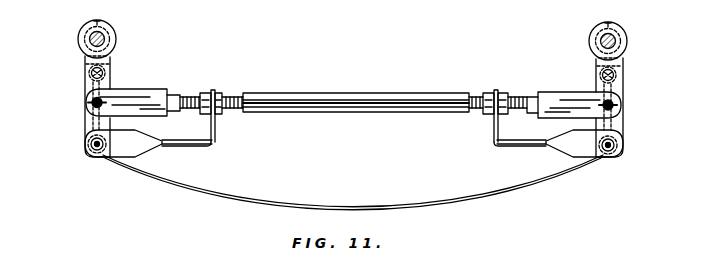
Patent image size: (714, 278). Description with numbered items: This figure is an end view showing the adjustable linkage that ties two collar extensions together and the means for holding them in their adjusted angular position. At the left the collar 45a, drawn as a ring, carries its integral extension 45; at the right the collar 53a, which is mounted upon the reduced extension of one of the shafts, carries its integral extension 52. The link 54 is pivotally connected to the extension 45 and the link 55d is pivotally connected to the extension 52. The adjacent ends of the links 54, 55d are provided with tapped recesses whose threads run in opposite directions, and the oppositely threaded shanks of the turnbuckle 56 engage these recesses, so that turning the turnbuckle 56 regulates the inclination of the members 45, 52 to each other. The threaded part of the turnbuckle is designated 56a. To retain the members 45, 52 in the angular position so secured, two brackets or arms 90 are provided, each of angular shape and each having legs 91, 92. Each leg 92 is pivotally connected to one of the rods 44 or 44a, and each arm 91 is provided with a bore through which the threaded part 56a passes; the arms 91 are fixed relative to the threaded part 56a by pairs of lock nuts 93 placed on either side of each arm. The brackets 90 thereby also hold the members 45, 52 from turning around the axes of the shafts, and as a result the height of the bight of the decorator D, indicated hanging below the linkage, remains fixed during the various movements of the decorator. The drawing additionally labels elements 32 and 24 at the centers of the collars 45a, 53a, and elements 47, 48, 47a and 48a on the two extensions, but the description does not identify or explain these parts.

The collar 45a is at (88, 28).
The pivot pin 32 is at (90, 39).
The integral extension of collar 45 is at (86, 118).
The bracket lug 48 is at (110, 63).
The bolt 47 is at (90, 74).
The link 54 is at (142, 97).
The rod 44 is at (91, 147).
The leg of bracket 92 is at (190, 145).
The arm of bracket 91 is at (216, 125).
The bracket or arm 90 is at (216, 142).
The lock nuts 93 is at (212, 92).
The threaded part of turnbuckle 56a is at (231, 95).
The turnbuckle 56 is at (368, 93).
The collar 53a is at (619, 29).
The pivot pin 24 is at (615, 41).
The integral extension of collar 52 is at (624, 120).
The bracket lug 48a is at (596, 67).
The bolt 47a is at (617, 75).
The link 55d is at (577, 81).
The rod 44a is at (619, 148).
The decorator D is at (364, 194).